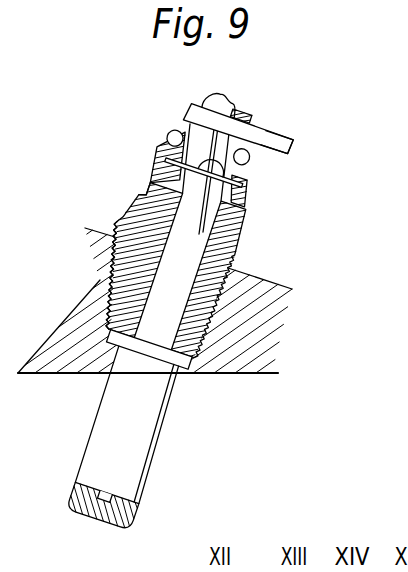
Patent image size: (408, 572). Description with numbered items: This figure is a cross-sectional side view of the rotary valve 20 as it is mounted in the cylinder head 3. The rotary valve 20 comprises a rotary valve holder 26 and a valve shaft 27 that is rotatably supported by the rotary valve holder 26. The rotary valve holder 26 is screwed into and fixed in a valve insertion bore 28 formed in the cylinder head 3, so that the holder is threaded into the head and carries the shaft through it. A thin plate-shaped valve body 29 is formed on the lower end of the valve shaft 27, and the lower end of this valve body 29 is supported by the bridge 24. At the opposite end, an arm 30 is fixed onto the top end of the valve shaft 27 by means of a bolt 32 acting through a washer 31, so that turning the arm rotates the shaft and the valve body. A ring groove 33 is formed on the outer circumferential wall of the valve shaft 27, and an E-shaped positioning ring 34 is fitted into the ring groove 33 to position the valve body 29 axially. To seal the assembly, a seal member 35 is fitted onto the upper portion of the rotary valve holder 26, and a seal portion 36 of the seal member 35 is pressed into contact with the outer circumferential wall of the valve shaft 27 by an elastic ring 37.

The cylinder head 3 is at (80, 318).
The rotary valve 20 is at (151, 157).
The bridge 24 is at (103, 521).
The rotary valve holder 26 is at (228, 235).
The valve shaft 27 is at (190, 252).
The valve insertion bore 28 is at (113, 302).
The valve body 29 is at (150, 430).
The arm 30 is at (284, 128).
The washer 31 is at (192, 100).
The bolt 32 is at (232, 98).
The ring groove 33 is at (253, 170).
The positioning ring 34 is at (250, 185).
The seal member 35 is at (150, 182).
The seal portion 36 is at (168, 130).
The elastic ring 37 is at (248, 155).